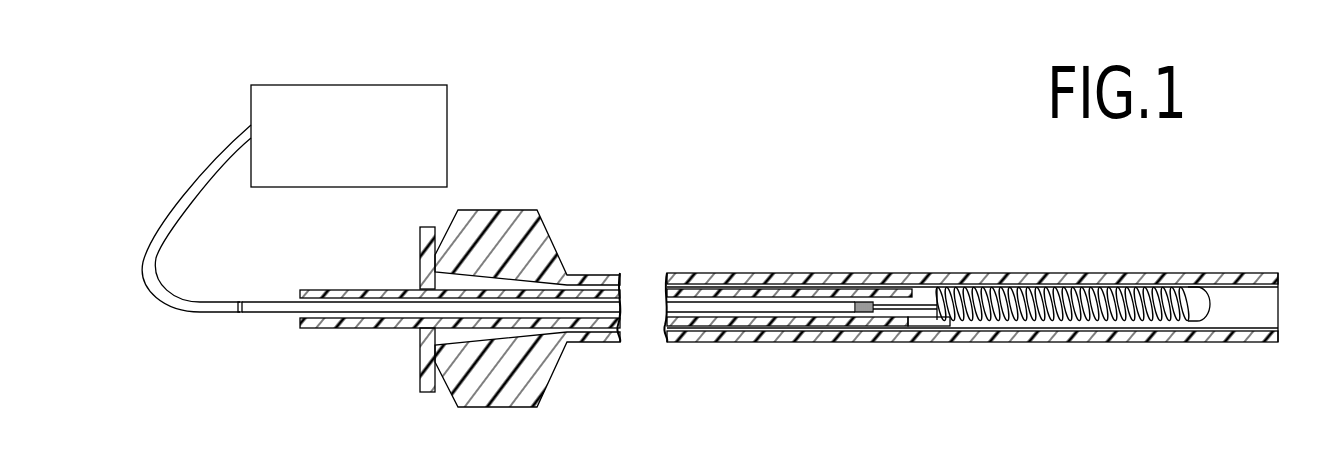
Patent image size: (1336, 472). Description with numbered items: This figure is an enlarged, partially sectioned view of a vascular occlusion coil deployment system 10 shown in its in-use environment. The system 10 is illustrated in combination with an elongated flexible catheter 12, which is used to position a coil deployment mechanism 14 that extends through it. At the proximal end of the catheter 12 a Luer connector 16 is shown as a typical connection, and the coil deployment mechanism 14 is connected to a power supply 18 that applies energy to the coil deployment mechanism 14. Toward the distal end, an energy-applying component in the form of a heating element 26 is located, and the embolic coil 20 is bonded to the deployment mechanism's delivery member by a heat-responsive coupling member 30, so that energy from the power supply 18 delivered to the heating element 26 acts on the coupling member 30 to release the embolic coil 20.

The vascular occlusion coil deployment system 10 is at (755, 262).
The elongated flexible catheter 12 is at (913, 271).
The coil deployment mechanism 14 is at (358, 328).
The Luer connector 16 is at (527, 208).
The power supply 18 is at (447, 126).
The embolic coil 20 is at (1168, 293).
The heating element 26 is at (873, 310).
The heat-responsive coupling member 30 is at (944, 288).